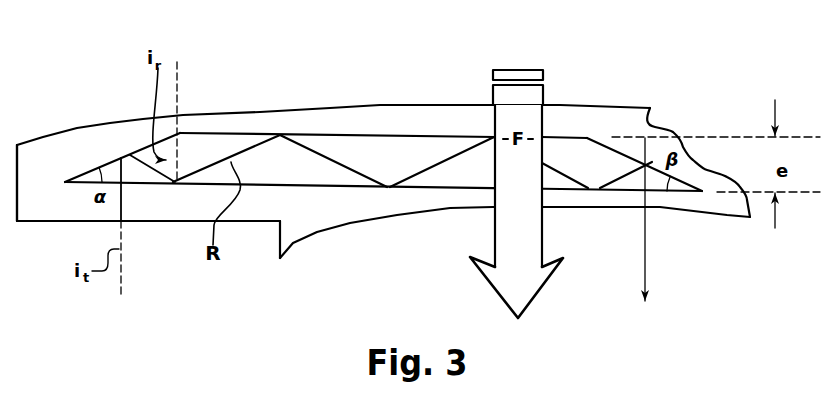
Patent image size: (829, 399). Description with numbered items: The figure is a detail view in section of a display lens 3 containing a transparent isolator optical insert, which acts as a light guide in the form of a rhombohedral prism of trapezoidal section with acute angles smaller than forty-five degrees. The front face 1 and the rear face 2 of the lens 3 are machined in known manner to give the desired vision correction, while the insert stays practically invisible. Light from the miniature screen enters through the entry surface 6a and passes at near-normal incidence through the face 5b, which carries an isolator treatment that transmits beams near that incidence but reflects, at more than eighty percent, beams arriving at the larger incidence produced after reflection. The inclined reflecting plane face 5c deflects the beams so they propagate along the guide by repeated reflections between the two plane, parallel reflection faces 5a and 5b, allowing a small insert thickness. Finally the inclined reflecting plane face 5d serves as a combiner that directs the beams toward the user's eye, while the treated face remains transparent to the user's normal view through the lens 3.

The front face 1 is at (382, 106).
The rear face 2 is at (337, 231).
The lens 3 is at (51, 150).
The reflection face 5a is at (318, 131).
The reflection face 5b is at (397, 191).
The reflecting plane face 5c is at (130, 154).
The reflecting plane face 5d is at (638, 158).
The entry surface 6a is at (56, 225).